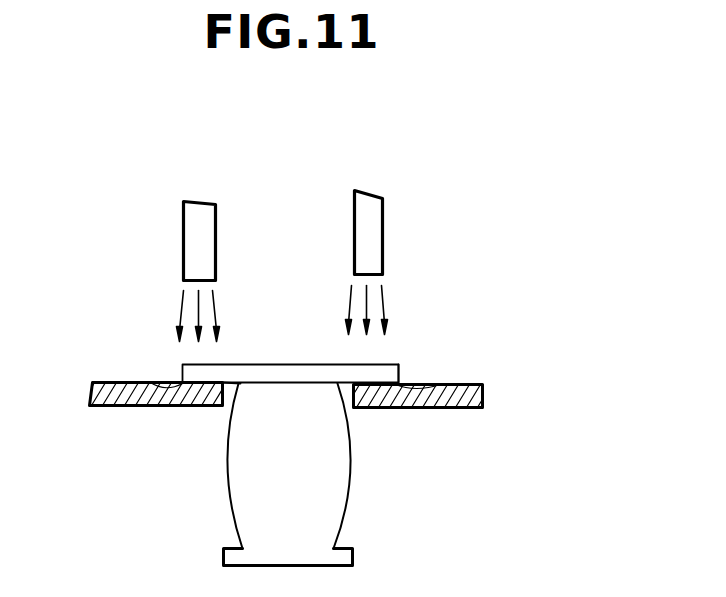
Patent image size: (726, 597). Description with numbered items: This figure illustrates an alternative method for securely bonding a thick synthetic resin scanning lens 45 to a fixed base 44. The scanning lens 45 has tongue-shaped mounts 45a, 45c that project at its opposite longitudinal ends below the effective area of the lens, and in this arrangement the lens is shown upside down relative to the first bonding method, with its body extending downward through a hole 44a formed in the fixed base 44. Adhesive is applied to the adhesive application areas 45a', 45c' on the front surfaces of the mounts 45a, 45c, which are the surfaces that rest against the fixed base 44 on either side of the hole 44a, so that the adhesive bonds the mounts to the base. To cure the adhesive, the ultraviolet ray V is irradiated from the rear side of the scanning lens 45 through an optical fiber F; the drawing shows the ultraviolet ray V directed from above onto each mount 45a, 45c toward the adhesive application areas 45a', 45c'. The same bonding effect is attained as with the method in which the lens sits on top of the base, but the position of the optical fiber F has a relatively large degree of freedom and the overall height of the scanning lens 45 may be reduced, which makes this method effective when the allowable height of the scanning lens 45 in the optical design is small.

The optical fiber F is at (377, 228).
The ultraviolet ray V is at (178, 304).
The fixed base 44 is at (130, 400).
The hole 44a is at (347, 390).
The scanning lens 45 is at (242, 481).
The mount 45a is at (291, 355).
The adhesive application area 45a' is at (129, 366).
The mount 45c is at (442, 356).
The adhesive application area 45c' is at (468, 372).